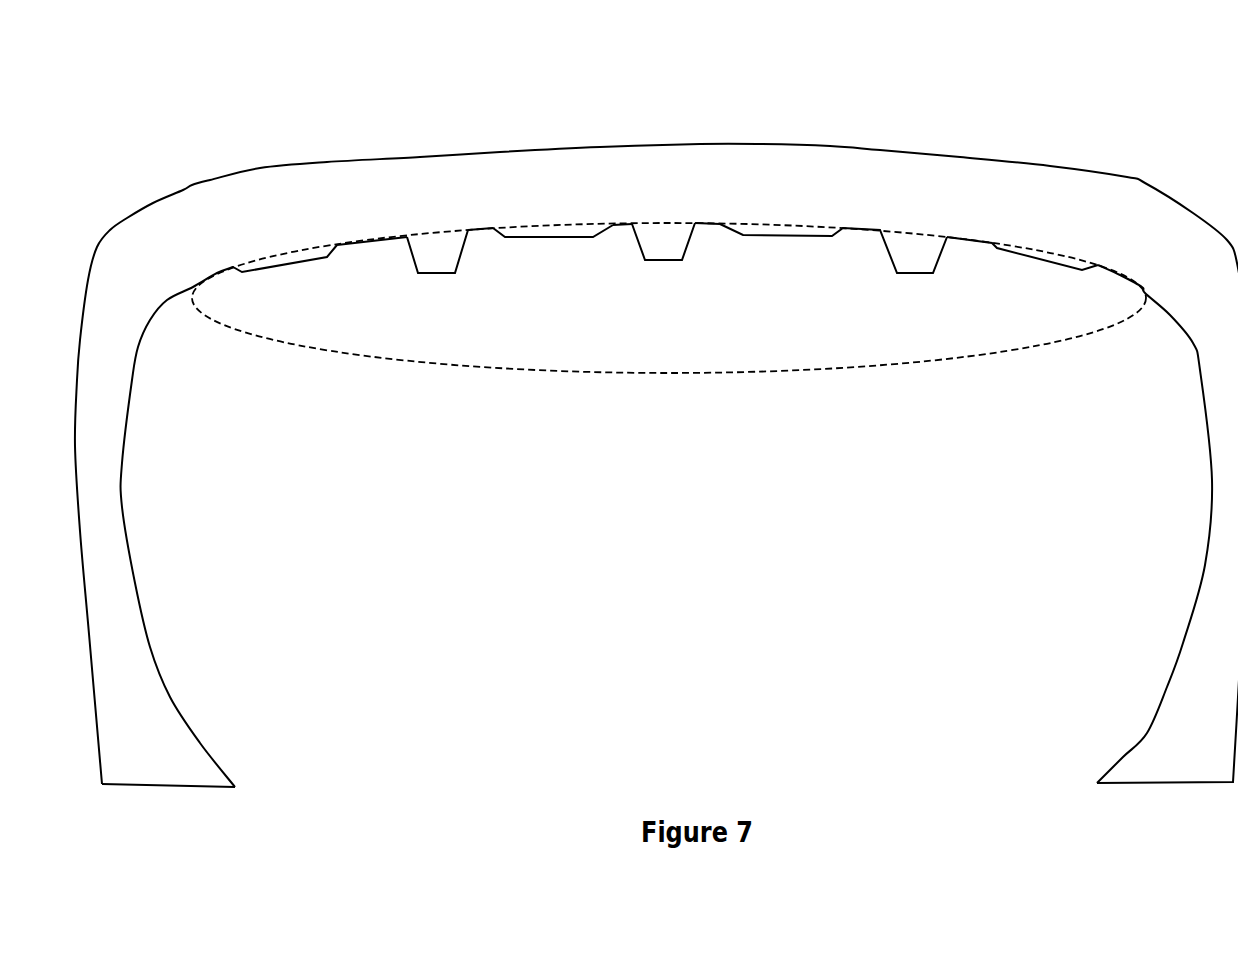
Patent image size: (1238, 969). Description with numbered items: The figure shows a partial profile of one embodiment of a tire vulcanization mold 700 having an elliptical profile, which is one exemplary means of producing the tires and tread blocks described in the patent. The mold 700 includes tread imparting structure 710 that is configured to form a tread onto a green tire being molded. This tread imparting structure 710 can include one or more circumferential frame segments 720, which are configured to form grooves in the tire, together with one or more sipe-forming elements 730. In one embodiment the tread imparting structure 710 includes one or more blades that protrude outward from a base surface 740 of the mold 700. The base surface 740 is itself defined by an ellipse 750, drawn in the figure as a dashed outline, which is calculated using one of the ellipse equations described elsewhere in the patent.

The tire vulcanization mold 700 is at (654, 403).
The tread imparting structure 710 is at (812, 265).
The circumferential frame segments 720 is at (437, 273).
The sipe-forming elements 730 is at (547, 237).
The base surface 740 is at (365, 240).
The ellipse 750 is at (332, 353).